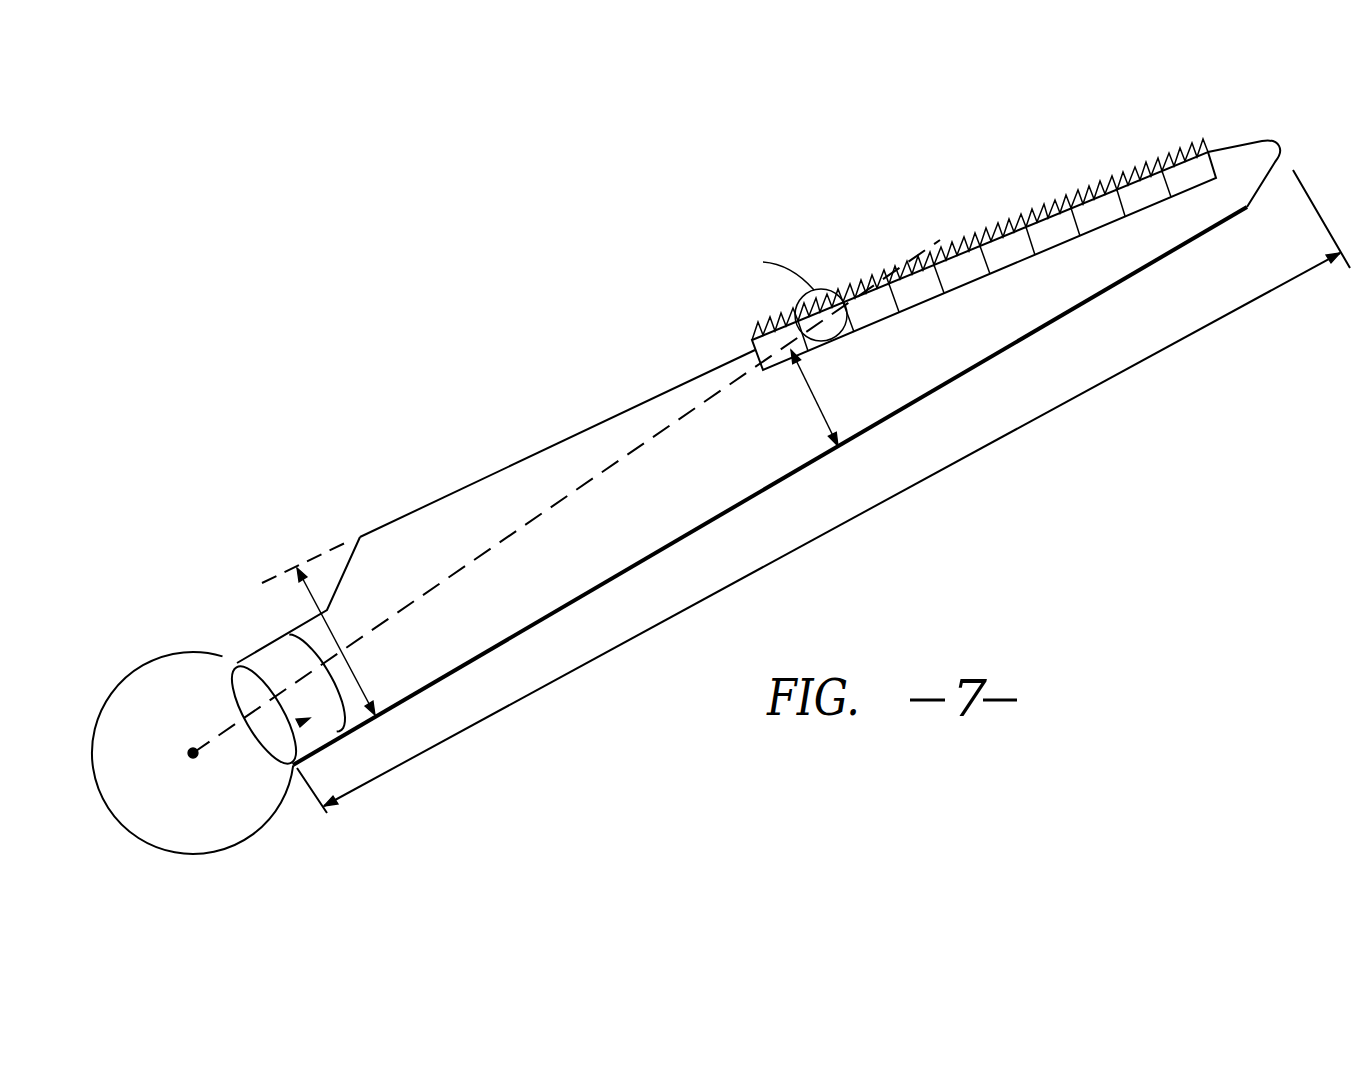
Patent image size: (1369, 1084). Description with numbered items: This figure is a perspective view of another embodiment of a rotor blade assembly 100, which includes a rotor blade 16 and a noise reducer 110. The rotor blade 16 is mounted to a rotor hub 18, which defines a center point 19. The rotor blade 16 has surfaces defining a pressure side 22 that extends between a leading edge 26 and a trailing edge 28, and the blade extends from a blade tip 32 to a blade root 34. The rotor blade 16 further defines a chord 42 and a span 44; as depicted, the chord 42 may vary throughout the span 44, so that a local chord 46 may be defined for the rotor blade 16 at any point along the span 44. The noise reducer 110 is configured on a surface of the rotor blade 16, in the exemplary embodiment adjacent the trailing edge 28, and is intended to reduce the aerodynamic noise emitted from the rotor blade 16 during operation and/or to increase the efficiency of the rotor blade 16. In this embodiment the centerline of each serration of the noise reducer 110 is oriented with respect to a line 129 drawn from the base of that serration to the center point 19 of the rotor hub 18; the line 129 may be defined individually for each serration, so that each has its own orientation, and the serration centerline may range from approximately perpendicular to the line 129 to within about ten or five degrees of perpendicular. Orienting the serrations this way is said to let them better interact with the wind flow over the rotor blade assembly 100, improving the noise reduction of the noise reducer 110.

The rotor blade 16 is at (543, 432).
The rotor hub 18 is at (152, 662).
The center point 19 is at (181, 768).
The pressure side 22 is at (460, 518).
The leading edge 26 is at (492, 652).
The trailing edge 28 is at (380, 523).
The blade tip 32 is at (1247, 147).
The blade root 34 is at (310, 720).
The chord 42 is at (327, 632).
The span 44 is at (855, 513).
The local chord 46 is at (817, 393).
The rotor blade assembly 100 is at (577, 320).
The noise reducer 110 is at (1010, 205).
The line 129 is at (658, 430).